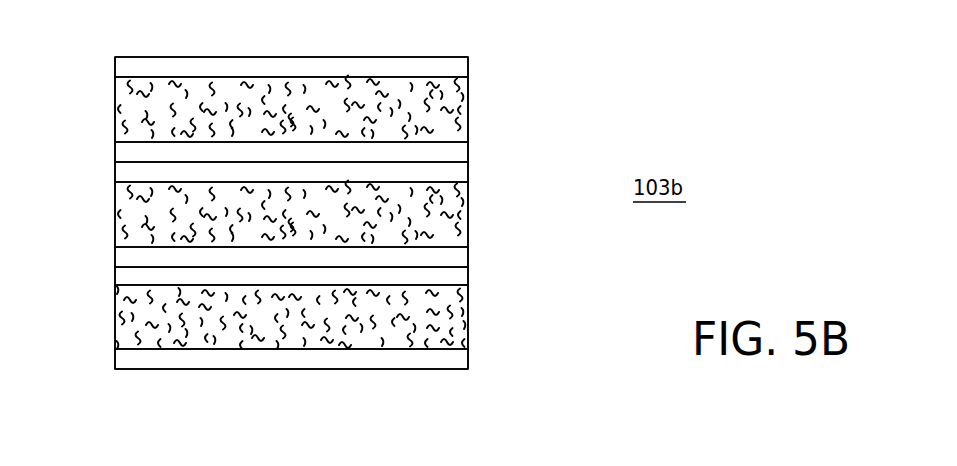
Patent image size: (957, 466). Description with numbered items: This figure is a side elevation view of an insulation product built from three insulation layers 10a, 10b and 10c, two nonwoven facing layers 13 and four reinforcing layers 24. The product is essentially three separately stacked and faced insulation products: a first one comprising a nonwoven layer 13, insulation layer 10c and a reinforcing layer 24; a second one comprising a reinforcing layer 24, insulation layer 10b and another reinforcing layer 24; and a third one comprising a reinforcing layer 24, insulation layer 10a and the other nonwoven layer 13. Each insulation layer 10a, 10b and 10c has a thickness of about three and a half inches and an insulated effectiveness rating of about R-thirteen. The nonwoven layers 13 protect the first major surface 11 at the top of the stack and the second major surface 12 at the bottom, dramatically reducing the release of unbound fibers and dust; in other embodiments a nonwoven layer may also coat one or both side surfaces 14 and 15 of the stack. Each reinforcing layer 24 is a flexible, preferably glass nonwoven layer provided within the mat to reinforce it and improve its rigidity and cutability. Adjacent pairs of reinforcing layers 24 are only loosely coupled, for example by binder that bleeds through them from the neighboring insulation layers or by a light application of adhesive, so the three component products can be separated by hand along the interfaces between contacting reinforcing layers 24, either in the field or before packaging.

The first major surface 11 is at (198, 77).
The second major surface 12 is at (218, 350).
The nonwoven layer 13 is at (460, 67).
The side surface 14 is at (468, 221).
The side surface 15 is at (115, 230).
The reinforcing layer 24 is at (452, 152).
The insulation layer 10a is at (465, 98).
The insulation layer 10b is at (466, 205).
The insulation layer 10c is at (465, 325).